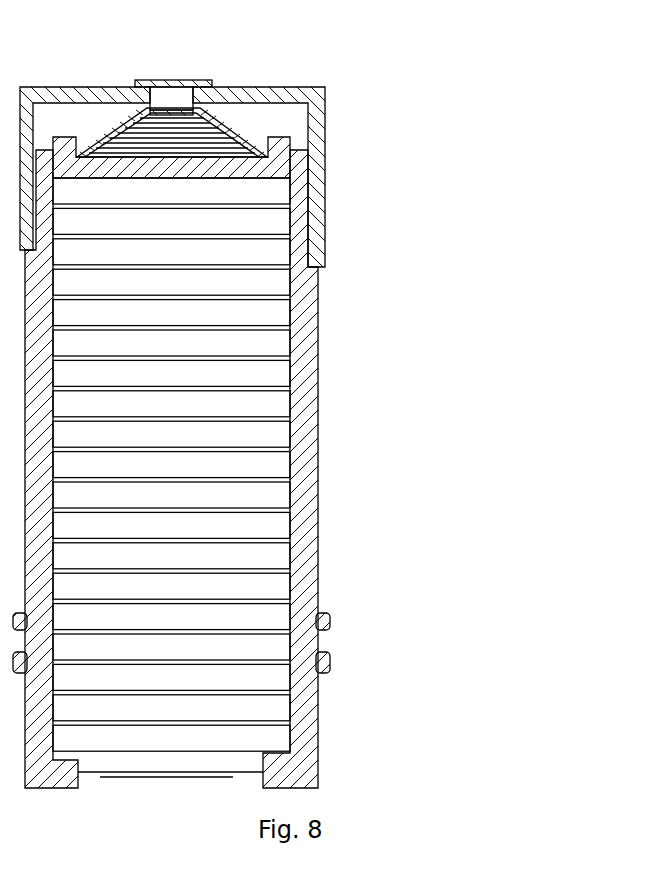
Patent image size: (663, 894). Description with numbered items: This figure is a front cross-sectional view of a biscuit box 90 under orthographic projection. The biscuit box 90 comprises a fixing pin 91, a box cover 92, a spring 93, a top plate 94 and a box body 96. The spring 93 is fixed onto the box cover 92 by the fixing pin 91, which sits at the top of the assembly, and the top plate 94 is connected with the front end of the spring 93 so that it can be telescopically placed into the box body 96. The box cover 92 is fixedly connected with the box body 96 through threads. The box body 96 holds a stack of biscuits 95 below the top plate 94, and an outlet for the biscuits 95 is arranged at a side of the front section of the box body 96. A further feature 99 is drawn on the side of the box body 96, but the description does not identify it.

The biscuit box 90 is at (496, 14).
The fixing pin 91 is at (168, 92).
The box cover 92 is at (317, 130).
The spring 93 is at (217, 130).
The top plate 94 is at (218, 168).
The biscuits 95 is at (275, 313).
The box body 96 is at (310, 432).
The locking protrusion 99 is at (328, 667).